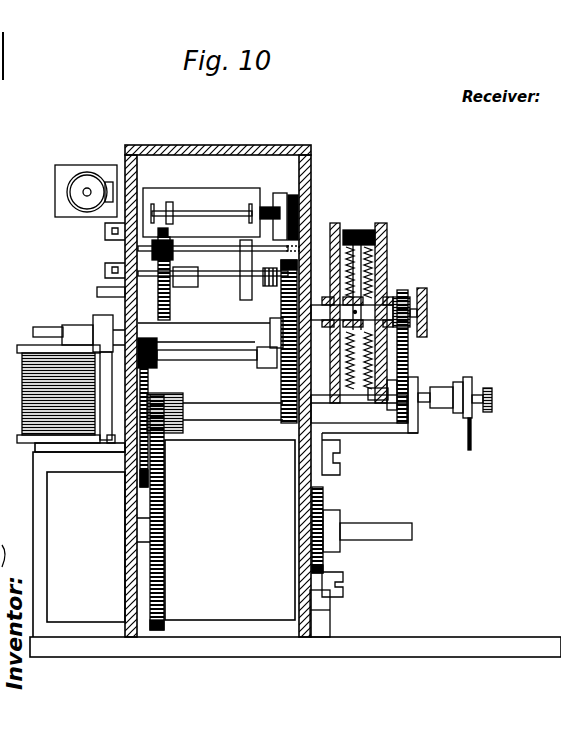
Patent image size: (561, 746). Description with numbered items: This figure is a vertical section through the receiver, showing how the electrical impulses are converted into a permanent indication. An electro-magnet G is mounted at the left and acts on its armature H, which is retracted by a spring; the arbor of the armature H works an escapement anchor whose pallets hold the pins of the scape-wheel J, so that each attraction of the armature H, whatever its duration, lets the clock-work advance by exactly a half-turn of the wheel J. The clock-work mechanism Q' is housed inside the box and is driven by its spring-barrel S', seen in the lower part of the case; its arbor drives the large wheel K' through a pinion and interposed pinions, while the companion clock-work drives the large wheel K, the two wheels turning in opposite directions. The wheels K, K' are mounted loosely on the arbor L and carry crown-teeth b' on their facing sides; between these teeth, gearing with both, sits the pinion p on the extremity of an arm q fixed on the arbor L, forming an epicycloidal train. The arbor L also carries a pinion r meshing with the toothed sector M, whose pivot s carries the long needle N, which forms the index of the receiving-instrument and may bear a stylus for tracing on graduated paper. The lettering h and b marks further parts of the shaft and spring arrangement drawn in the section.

The armature H is at (79, 330).
The electro-magnet G is at (61, 394).
The scape-wheel J is at (267, 238).
The clock-work mechanism Q' is at (213, 291).
The shaft h is at (210, 333).
The large wheel K is at (328, 313).
The large wheel K' is at (389, 313).
The pinion p is at (352, 230).
The arm q is at (387, 263).
The crown-teeth b' is at (359, 360).
The arbor L is at (385, 310).
The toothed sector M is at (410, 330).
The pinion r is at (420, 337).
The spring seat b is at (370, 401).
The pivot s is at (427, 402).
The needle N is at (472, 413).
The spring-barrel S' is at (230, 530).